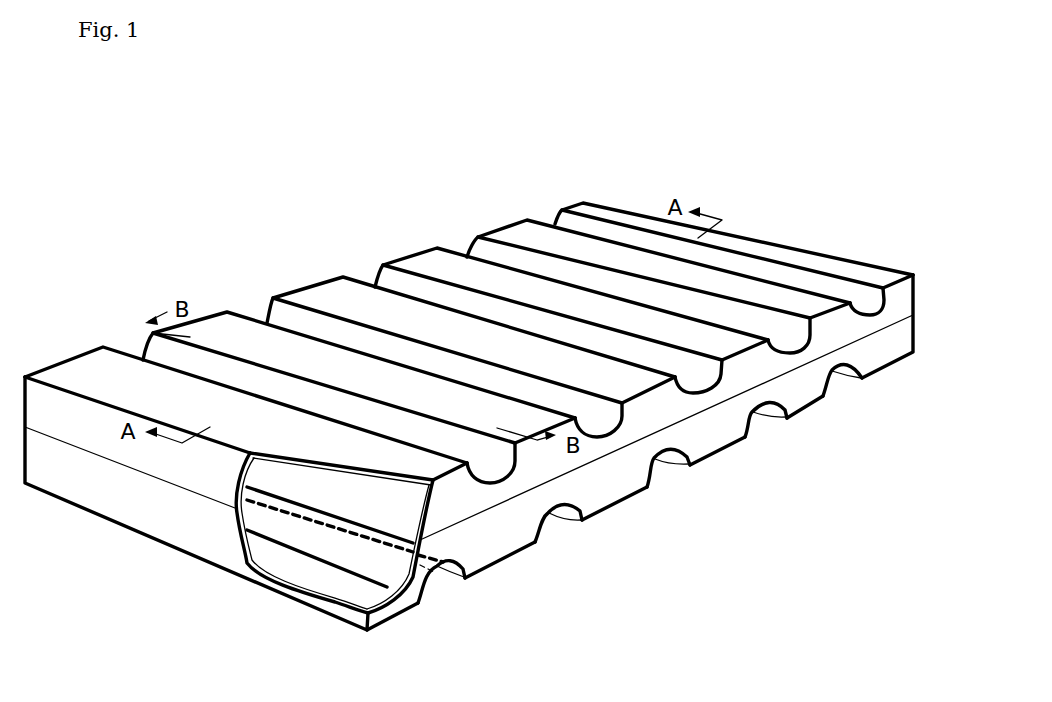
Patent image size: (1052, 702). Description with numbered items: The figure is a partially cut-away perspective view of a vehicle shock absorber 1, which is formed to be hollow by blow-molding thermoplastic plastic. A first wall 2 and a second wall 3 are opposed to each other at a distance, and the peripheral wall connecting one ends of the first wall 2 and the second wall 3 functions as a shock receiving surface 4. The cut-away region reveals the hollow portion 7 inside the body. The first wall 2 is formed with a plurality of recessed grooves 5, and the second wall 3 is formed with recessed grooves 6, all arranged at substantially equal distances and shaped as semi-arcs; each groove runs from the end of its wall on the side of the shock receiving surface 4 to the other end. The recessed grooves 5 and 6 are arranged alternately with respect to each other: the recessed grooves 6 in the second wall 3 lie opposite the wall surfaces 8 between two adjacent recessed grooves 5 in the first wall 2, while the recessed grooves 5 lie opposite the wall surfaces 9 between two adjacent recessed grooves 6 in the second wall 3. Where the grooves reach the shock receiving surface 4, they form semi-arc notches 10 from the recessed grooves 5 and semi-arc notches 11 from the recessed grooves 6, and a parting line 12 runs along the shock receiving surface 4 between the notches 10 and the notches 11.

The vehicle shock absorber 1 is at (298, 227).
The first wall 2 is at (318, 296).
The second wall 3 is at (897, 372).
The shock receiving surface 4 is at (621, 487).
The recessed grooves 5 is at (427, 357).
The recessed grooves 6 is at (667, 472).
The hollow portion 7 is at (294, 573).
The wall surfaces 8 is at (241, 343).
The wall surfaces 9 is at (808, 407).
The semi-arc notches 10 is at (791, 333).
The semi-arc notches 11 is at (850, 375).
The parting line 12 is at (725, 402).